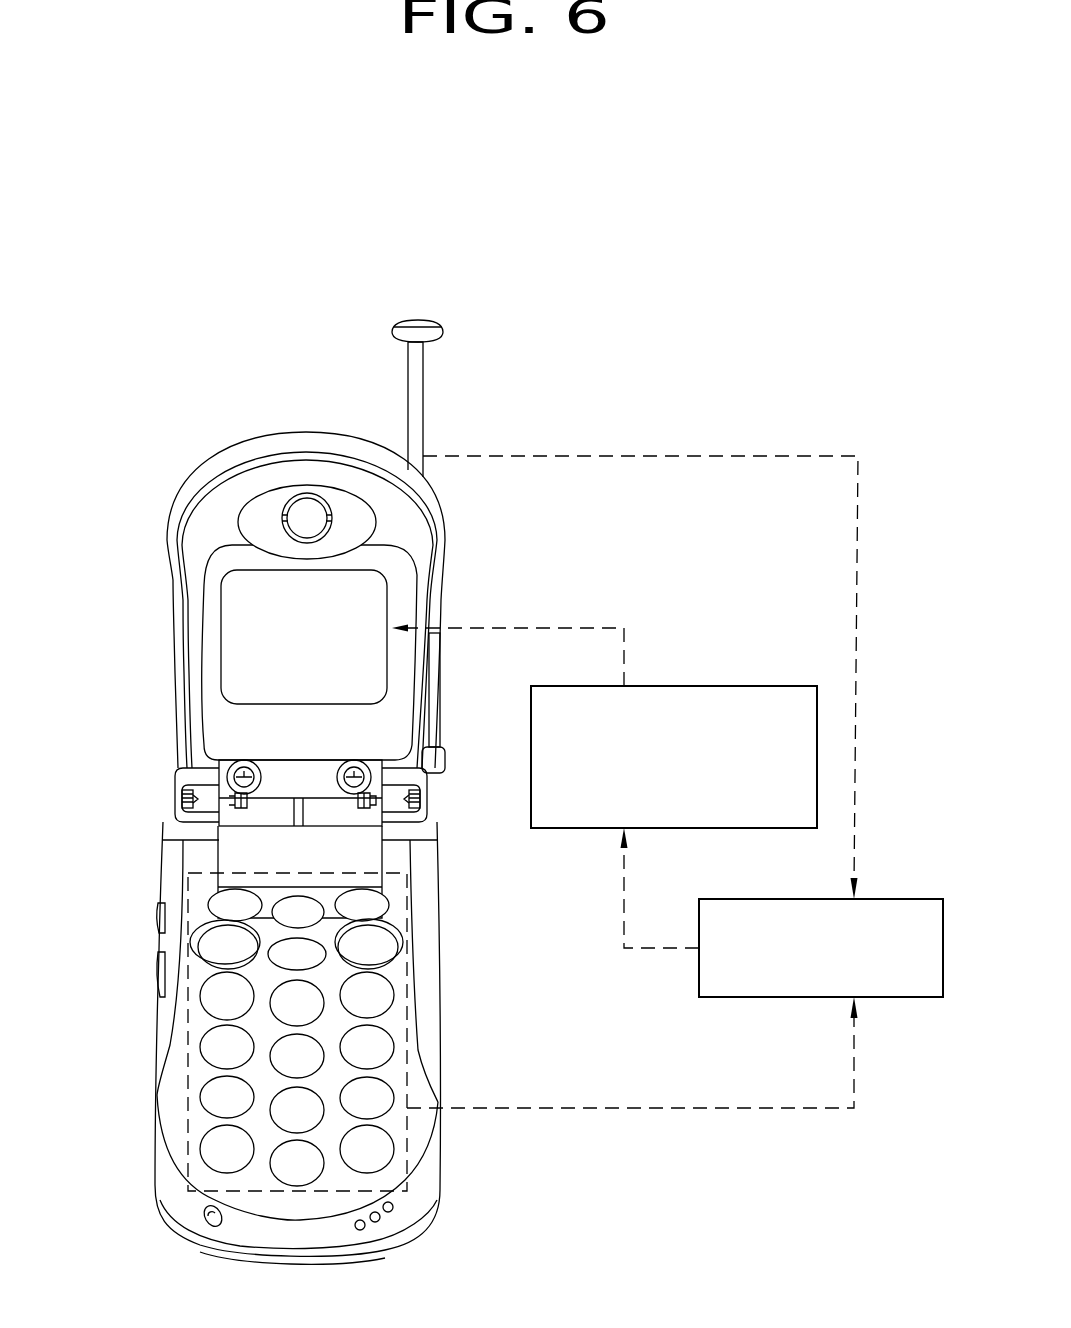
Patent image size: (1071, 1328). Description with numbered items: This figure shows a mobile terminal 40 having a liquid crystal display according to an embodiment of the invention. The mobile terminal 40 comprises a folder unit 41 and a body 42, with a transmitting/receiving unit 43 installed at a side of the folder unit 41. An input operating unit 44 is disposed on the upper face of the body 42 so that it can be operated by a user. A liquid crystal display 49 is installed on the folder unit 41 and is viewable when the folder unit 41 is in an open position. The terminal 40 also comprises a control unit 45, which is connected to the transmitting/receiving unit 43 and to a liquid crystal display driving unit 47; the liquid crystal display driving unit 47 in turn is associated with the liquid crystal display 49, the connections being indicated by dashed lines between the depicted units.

The mobile terminal 40 is at (150, 507).
The folder unit 41 is at (207, 470).
The body 42 is at (160, 1073).
The transmitting/receiving unit 43 is at (415, 400).
The input operating unit 44 is at (407, 1132).
The control unit 45 is at (890, 899).
The liquid crystal display driving unit 47 is at (683, 686).
The liquid crystal display 49 is at (228, 603).